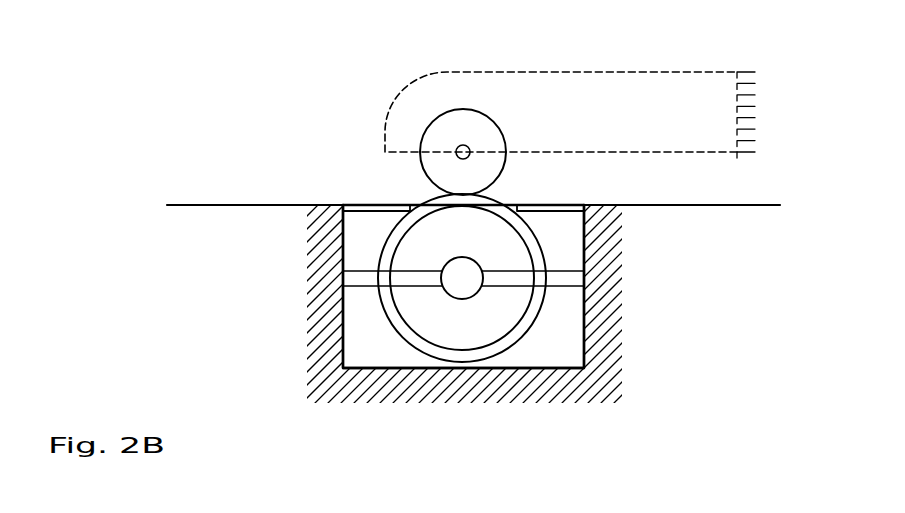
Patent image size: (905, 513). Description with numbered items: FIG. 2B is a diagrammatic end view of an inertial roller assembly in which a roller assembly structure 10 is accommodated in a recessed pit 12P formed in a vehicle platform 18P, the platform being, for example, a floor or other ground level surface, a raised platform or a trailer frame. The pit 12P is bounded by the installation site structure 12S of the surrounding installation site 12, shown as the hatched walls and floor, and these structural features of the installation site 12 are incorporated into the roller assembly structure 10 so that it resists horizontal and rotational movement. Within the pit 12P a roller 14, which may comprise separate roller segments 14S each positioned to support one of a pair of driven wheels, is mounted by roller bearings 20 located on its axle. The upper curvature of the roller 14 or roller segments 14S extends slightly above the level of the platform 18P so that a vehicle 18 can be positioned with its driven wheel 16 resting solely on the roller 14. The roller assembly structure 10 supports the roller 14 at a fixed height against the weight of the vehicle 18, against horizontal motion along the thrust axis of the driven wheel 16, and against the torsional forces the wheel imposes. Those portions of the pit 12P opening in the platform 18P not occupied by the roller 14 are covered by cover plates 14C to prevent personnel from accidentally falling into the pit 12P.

The roller assembly structure 10 is at (392, 298).
The installation site 12 is at (460, 352).
The recessed pit 12P is at (532, 286).
The installation site structure 12S is at (410, 357).
The roller 14 is at (461, 337).
The roller segments 14S is at (455, 334).
The cover plates 14C is at (494, 189).
The driven wheel 16 is at (504, 146).
The vehicle 18 is at (570, 86).
The vehicle platform 18P is at (476, 165).
The roller bearings 20 is at (421, 362).